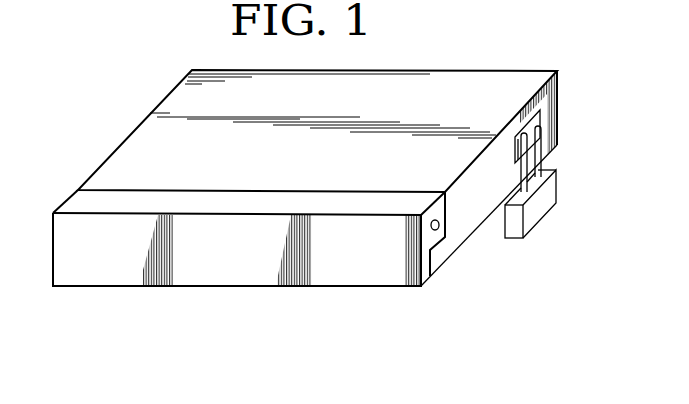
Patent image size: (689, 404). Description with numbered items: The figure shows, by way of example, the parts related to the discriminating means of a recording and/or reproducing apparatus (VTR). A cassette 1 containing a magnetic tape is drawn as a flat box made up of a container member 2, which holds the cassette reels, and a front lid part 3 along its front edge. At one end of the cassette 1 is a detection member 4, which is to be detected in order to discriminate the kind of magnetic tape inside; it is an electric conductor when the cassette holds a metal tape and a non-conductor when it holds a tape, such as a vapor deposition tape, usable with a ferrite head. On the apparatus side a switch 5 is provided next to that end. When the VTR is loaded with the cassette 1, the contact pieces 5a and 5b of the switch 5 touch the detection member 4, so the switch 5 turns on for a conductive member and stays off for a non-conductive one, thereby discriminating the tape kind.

The cassette 1 is at (253, 292).
The container member 2 is at (557, 92).
The front lid part 3 is at (65, 202).
The detection member 4 is at (546, 120).
The switch 5 is at (548, 203).
The contact piece 5a is at (521, 168).
The contact piece 5b is at (545, 156).